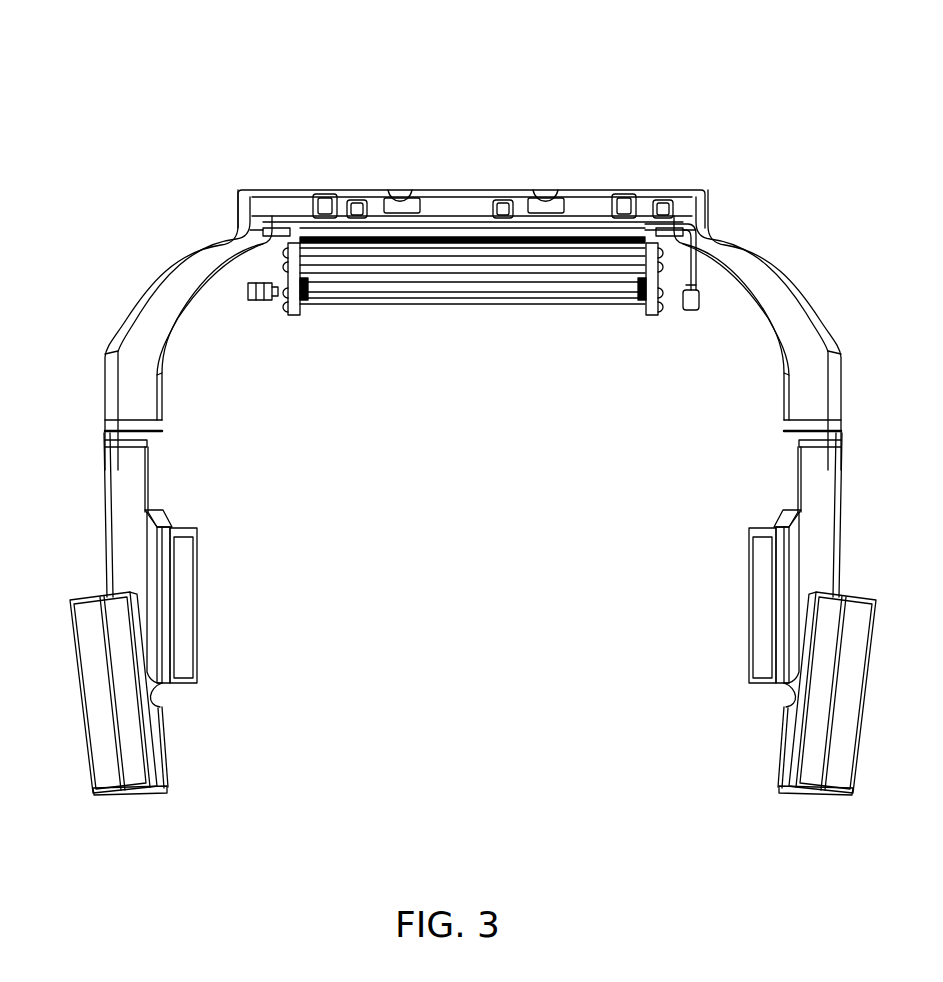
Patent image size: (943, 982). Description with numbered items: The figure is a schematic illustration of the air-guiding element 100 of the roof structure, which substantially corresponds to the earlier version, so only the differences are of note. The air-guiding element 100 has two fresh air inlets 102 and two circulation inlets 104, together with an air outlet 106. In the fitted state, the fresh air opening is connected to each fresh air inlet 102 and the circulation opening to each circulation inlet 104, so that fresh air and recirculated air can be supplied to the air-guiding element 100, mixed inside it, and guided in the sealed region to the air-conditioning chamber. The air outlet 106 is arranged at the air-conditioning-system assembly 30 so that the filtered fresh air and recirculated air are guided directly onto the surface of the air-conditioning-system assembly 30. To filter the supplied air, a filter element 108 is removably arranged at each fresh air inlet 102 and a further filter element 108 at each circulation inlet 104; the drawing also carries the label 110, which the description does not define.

The air-guiding element 100 is at (697, 68).
The air-conditioning-system assembly 30 is at (456, 285).
The air outlet 106 is at (348, 232).
The pad 110 is at (178, 596).
The circulation inlet 104 is at (183, 687).
The filter element 108 is at (93, 663).
The fresh air inlet 102 is at (113, 793).